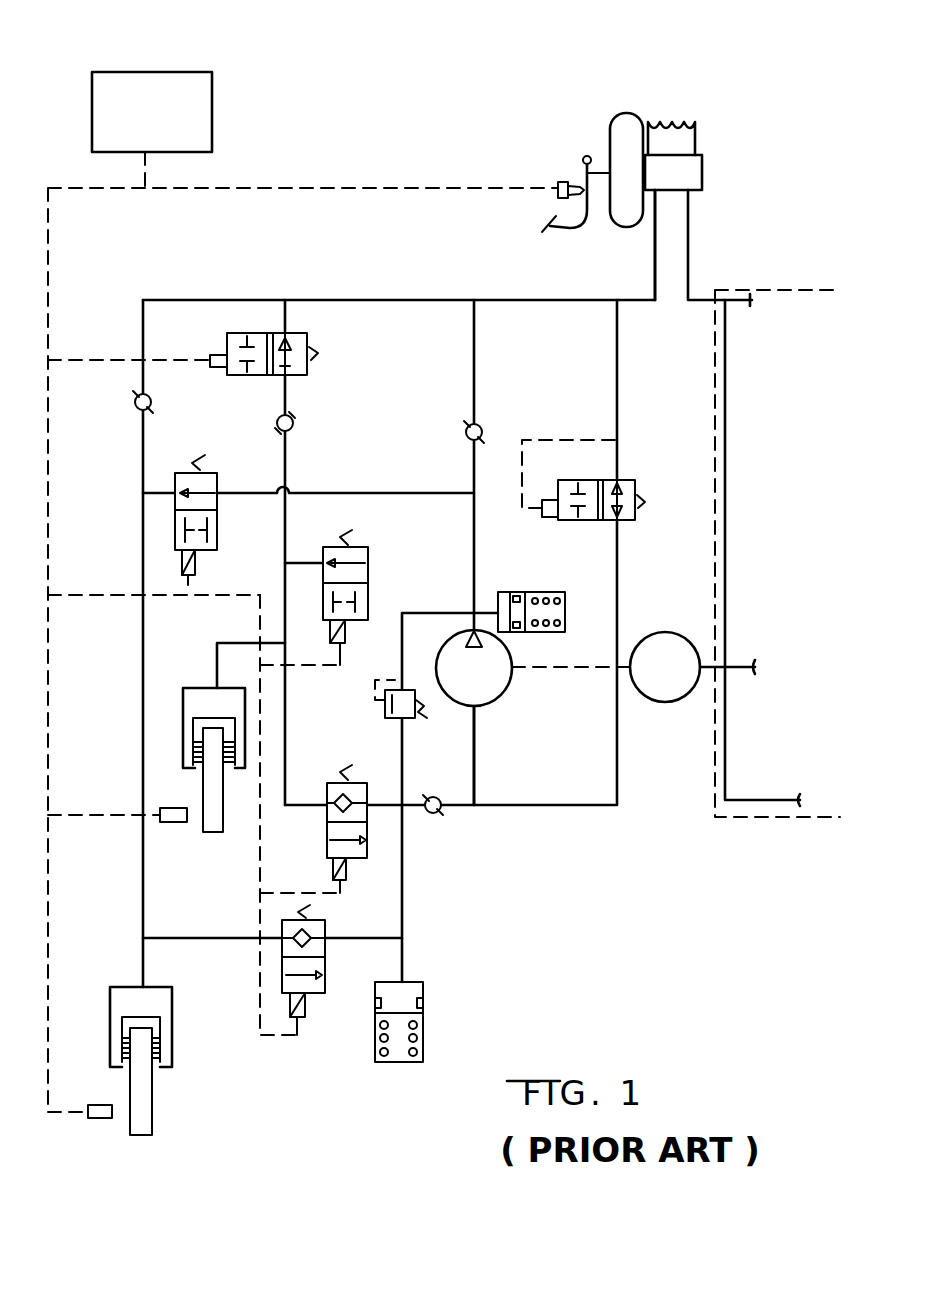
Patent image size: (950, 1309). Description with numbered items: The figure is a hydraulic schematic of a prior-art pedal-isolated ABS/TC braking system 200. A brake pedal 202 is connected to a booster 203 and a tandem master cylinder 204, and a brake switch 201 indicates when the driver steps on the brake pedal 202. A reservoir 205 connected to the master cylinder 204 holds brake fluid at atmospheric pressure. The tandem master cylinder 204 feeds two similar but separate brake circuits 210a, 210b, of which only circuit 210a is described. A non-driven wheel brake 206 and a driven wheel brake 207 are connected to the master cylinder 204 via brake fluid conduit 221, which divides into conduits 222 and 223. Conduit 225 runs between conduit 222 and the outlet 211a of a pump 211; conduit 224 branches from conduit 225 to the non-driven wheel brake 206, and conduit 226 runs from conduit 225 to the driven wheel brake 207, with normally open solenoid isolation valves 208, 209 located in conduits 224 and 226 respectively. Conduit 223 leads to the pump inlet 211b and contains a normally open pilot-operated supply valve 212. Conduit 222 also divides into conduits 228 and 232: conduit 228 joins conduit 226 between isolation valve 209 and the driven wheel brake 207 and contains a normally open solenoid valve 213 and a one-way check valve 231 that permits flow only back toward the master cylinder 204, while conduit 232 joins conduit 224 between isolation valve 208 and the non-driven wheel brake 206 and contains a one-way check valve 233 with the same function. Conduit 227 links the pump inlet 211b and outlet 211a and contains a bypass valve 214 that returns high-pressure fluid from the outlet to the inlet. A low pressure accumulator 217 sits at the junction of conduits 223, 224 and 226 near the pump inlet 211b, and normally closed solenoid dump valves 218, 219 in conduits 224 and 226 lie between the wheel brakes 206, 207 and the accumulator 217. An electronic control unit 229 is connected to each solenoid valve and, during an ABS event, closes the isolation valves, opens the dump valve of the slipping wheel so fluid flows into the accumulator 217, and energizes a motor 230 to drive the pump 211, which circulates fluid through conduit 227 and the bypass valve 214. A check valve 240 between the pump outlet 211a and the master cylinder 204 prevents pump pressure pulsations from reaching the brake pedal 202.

The pedal-isolated ABS/TC braking system 200 is at (447, 106).
The brake switch 201 is at (565, 178).
The brake pedal 202 is at (548, 216).
The booster 203 is at (626, 112).
The tandem master cylinder 204 is at (704, 172).
The reservoir 205 is at (700, 126).
The non-driven wheel brake 206 is at (172, 1000).
The driven wheel brake 207 is at (200, 695).
The solenoid isolation valve 208 is at (175, 550).
The solenoid isolation valve 209 is at (370, 587).
The brake circuit 210a is at (302, 292).
The brake circuit 210b is at (770, 290).
The pump 211 is at (512, 690).
The pump outlet 211a is at (477, 628).
The pump inlet 211b is at (480, 708).
The pilot-operated supply valve 212 is at (626, 480).
The solenoid valve 213 is at (307, 345).
The bypass valve 214 is at (427, 720).
The low pressure accumulator 217 is at (425, 1003).
The solenoid dump valve 218 is at (327, 988).
The solenoid dump valve 219 is at (327, 830).
The brake fluid conduit 221 is at (653, 258).
The conduit 222 is at (578, 303).
The conduit 223 is at (620, 401).
The conduit 224 is at (373, 492).
The conduit 225 is at (468, 383).
The conduit 226 is at (304, 563).
The conduit 227 is at (410, 775).
The conduit 228 is at (288, 460).
The electronic control unit 229 is at (212, 104).
The motor 230 is at (660, 632).
The one-way check valve 231 is at (297, 418).
The conduit 232 is at (143, 323).
The one-way check valve 233 is at (152, 398).
The check valve 240 is at (481, 426).